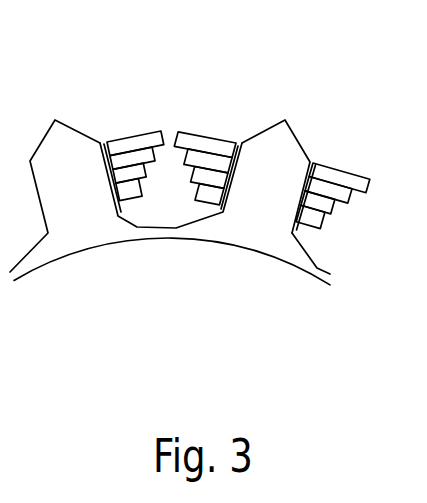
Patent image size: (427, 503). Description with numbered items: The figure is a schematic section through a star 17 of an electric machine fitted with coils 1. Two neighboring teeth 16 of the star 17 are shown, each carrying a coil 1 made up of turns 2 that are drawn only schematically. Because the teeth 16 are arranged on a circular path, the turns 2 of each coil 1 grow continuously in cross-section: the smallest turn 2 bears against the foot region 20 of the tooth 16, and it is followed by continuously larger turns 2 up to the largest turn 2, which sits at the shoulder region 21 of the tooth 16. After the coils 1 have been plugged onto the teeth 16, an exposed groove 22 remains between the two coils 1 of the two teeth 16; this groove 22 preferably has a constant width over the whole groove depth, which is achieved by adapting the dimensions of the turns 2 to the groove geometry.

The coil 1 is at (216, 185).
The turn 2 is at (358, 184).
The tooth 16 is at (292, 145).
The star 17 is at (194, 313).
The foot region 20 is at (229, 222).
The shoulder region 21 is at (238, 140).
The groove 22 is at (172, 140).